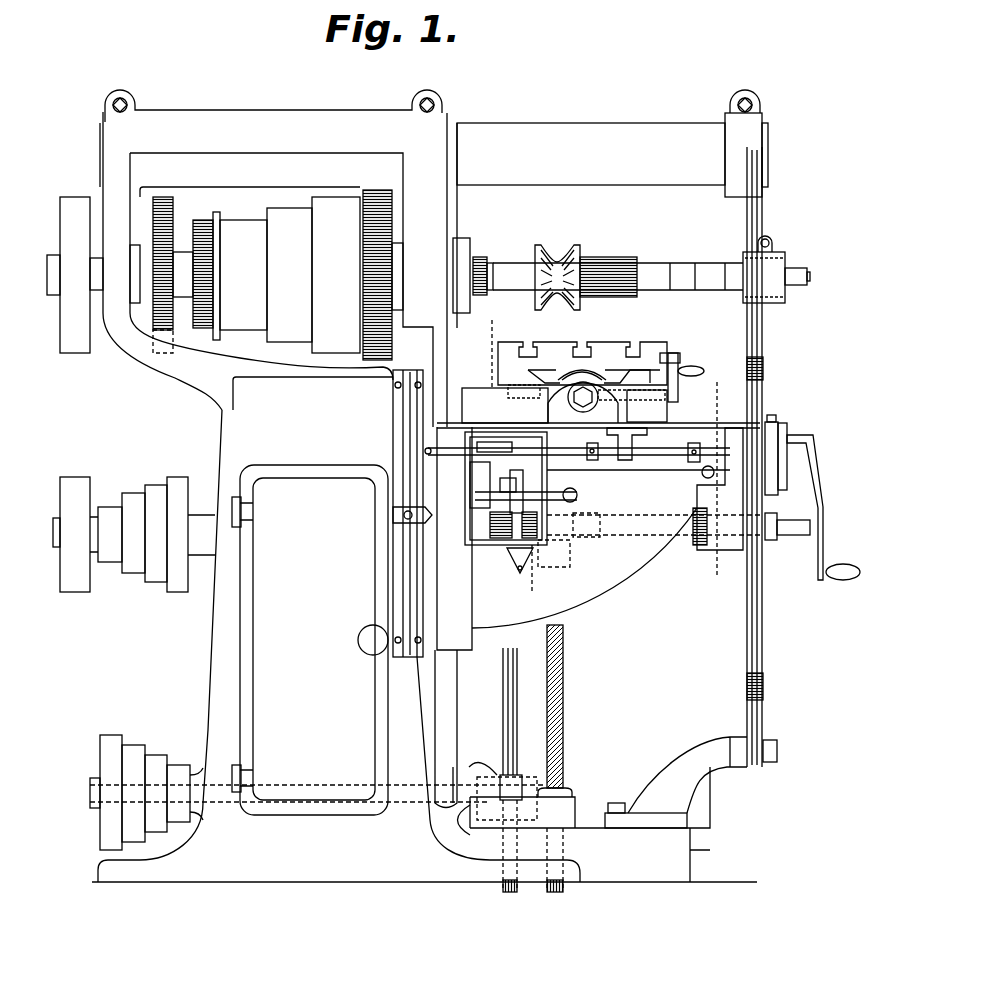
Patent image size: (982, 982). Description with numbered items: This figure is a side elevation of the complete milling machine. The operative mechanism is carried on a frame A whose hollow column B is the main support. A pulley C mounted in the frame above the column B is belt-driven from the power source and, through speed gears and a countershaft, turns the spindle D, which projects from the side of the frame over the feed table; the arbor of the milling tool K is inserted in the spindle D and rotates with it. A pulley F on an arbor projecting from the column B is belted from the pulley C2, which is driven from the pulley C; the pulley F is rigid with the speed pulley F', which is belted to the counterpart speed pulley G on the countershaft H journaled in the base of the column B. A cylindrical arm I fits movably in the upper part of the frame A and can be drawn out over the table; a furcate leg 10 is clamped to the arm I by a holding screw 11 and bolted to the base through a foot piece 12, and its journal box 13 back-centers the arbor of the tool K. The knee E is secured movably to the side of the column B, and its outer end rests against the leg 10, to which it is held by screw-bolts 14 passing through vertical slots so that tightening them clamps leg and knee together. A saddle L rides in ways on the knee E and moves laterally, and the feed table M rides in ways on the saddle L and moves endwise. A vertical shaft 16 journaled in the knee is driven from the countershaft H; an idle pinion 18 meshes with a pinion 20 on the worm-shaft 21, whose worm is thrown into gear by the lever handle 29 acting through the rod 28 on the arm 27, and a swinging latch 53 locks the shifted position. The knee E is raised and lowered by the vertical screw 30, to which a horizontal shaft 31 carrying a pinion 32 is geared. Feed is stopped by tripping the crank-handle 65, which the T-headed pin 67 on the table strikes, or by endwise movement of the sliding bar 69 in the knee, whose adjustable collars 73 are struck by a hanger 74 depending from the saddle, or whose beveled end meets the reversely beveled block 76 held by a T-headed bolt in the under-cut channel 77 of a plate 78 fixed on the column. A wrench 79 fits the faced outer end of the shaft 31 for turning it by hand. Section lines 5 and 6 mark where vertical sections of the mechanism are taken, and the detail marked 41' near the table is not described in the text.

The frame A is at (187, 383).
The hollow column B is at (208, 652).
The pulley C is at (266, 275).
The pulley C2 is at (77, 352).
The spindle D is at (487, 258).
The knee E is at (614, 594).
The pulley F is at (75, 520).
The speed pulley F' is at (156, 522).
The speed pulley G is at (135, 748).
The countershaft H is at (90, 793).
The cylindrical arm I is at (591, 154).
The milling tool K is at (566, 250).
The saddle L is at (598, 405).
The feed table M is at (568, 338).
The section line 5 is at (528, 598).
The section line 6 is at (686, 568).
The furcate leg 10 is at (760, 336).
The holding screw 11 is at (754, 107).
The foot piece 12 is at (667, 775).
The journal box 13 is at (772, 266).
The screw-bolts 14 is at (776, 470).
The shaft 16 is at (503, 705).
The idle pinion 18 is at (497, 542).
The pinion 20 is at (487, 520).
The worm-shaft 21 is at (525, 512).
The arm 27 is at (522, 480).
The rod 28 is at (622, 472).
The lever handle 29 is at (702, 478).
The screw 30 is at (564, 682).
The horizontal shaft 31 is at (654, 537).
The pinion 32 is at (701, 547).
The arched guide 41' is at (592, 352).
The swinging latch 53 is at (578, 496).
The crank-handle 65 is at (678, 388).
The pin 67 is at (676, 355).
The sliding bar 69 is at (590, 452).
The adjustable collars 73 is at (596, 462).
The hanger 74 is at (640, 436).
The reversely beveled block 76 is at (393, 513).
The under-cut channel 77 is at (407, 553).
The plate 78 is at (403, 583).
The wrench 79 is at (823, 530).